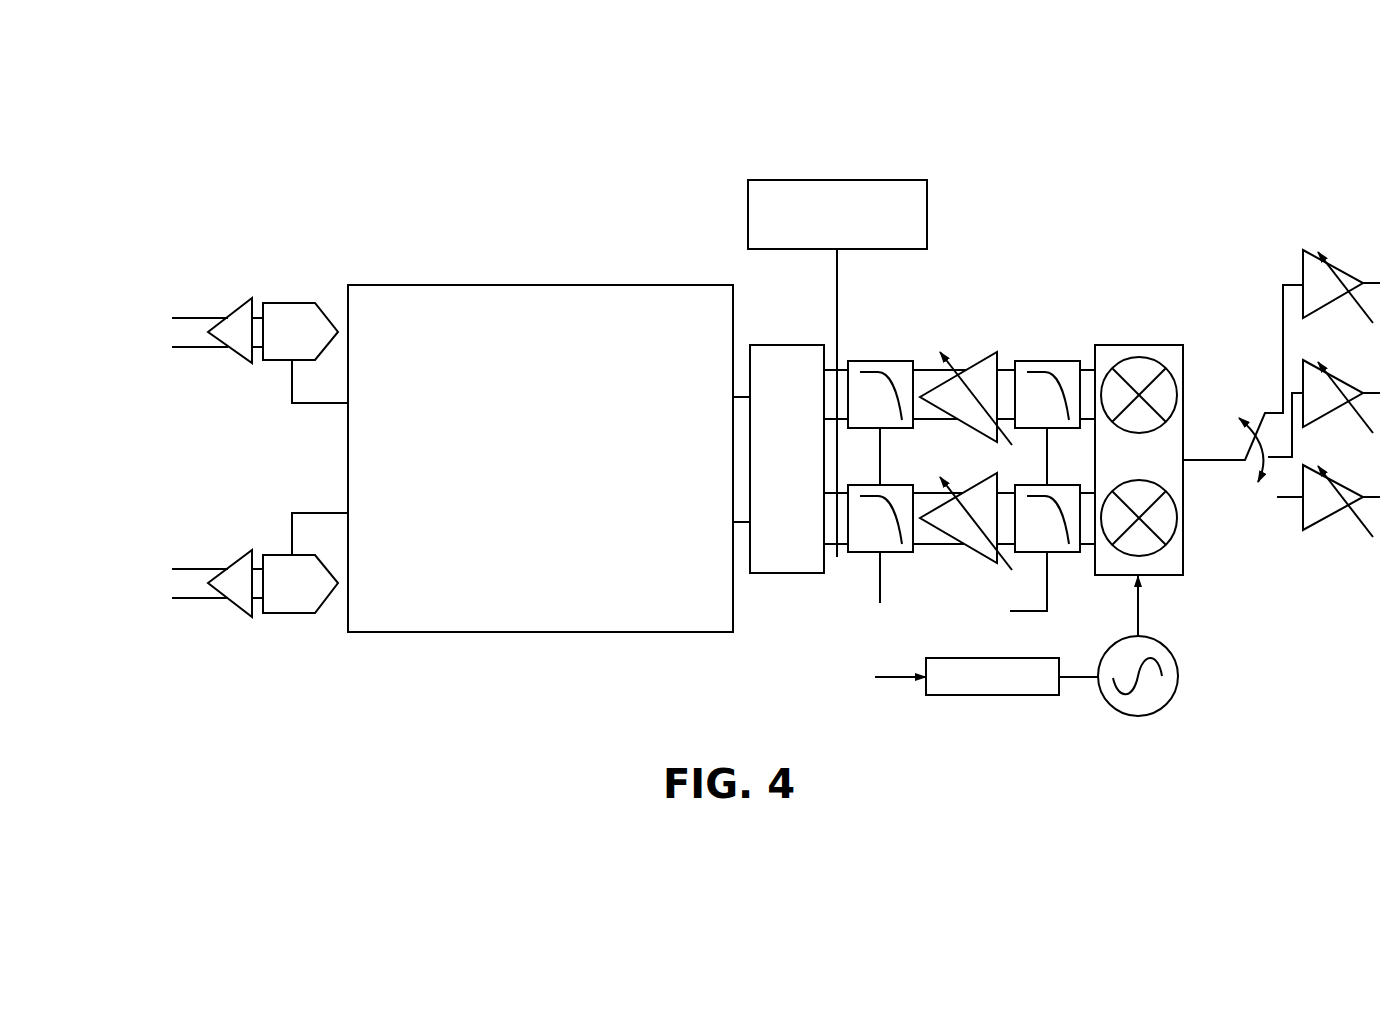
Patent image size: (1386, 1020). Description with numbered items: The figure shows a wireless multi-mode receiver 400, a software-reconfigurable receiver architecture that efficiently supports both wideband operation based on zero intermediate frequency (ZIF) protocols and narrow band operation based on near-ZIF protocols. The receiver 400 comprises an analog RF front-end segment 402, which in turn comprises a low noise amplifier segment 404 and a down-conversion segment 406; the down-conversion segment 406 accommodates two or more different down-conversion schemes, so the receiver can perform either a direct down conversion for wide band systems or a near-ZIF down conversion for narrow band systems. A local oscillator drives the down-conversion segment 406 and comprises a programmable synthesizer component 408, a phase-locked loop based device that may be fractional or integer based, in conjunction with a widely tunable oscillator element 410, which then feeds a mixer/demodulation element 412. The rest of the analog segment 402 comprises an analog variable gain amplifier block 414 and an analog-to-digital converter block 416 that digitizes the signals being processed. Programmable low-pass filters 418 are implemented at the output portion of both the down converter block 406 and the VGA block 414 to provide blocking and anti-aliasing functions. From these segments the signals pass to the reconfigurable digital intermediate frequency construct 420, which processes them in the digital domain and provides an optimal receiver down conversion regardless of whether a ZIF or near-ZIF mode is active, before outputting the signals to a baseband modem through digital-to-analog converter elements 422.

The wireless multi-mode receiver 400 is at (375, 128).
The analog RF front-end segment 402 is at (1053, 167).
The low noise amplifier segment 404 is at (1297, 216).
The down-conversion segment 406 is at (1149, 272).
The programmable synthesizer component 408 is at (993, 695).
The widely tunable oscillator element 410 is at (1178, 676).
The mixer/demodulation element 412 is at (1183, 520).
The analog variable gain amplifier block 414 is at (978, 277).
The analog-to-digital converter block 416 is at (762, 562).
The programmable low-pass filters 418 is at (837, 622).
The reconfigurable digital intermediate frequency construct 420 is at (648, 615).
The digital-to-analog converter elements 422 is at (284, 272).